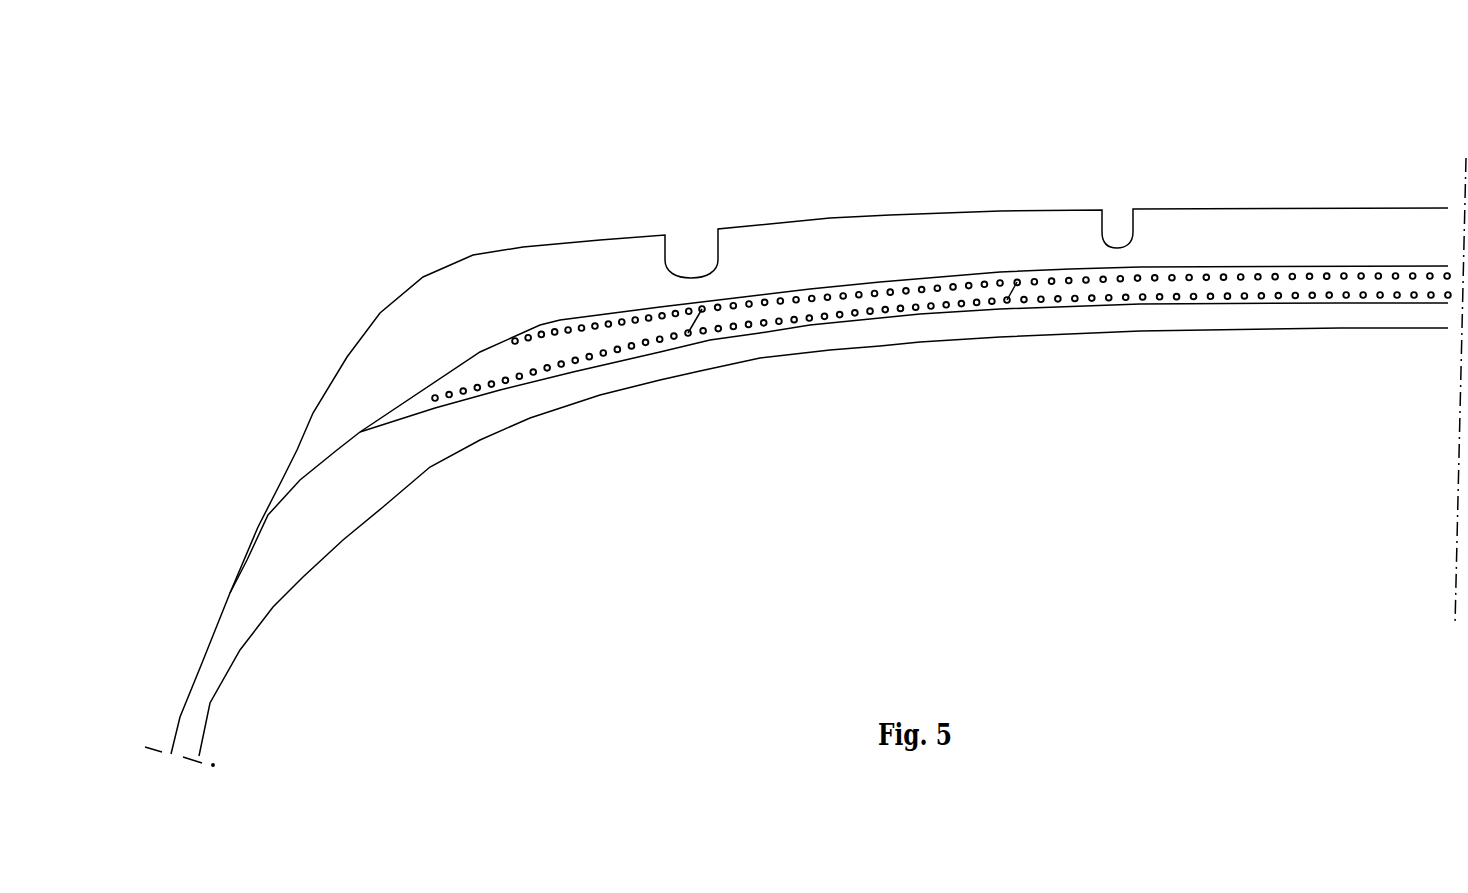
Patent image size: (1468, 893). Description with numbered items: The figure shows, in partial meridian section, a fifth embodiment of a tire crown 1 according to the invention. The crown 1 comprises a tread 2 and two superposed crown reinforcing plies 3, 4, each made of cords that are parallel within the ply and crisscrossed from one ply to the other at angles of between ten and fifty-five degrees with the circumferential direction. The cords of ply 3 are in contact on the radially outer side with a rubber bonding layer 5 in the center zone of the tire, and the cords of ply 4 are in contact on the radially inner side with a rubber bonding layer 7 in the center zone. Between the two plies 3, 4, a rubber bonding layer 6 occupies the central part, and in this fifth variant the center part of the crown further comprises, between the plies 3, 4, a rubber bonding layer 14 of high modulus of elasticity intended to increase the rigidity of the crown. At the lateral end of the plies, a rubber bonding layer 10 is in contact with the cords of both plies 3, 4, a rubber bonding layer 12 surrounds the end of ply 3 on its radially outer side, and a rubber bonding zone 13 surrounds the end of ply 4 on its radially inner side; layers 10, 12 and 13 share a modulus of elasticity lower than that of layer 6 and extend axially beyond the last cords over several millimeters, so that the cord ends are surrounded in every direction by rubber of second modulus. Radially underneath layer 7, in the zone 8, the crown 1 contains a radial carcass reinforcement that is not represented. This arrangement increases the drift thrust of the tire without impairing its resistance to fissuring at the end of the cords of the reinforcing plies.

The crown 1 is at (790, 182).
The tread 2 is at (890, 247).
The crown reinforcing ply 3 is at (990, 282).
The crown reinforcing ply 4 is at (1010, 290).
The rubber bonding layer 5 is at (1153, 273).
The rubber bonding layer 6 is at (882, 302).
The rubber bonding layer 7 is at (1200, 302).
The zone 8 is at (1063, 322).
The rubber bonding layer 10 is at (627, 330).
The rubber bonding layer 12 is at (608, 315).
The rubber bonding zone 13 is at (541, 369).
The rubber bonding layer 14 is at (1220, 290).